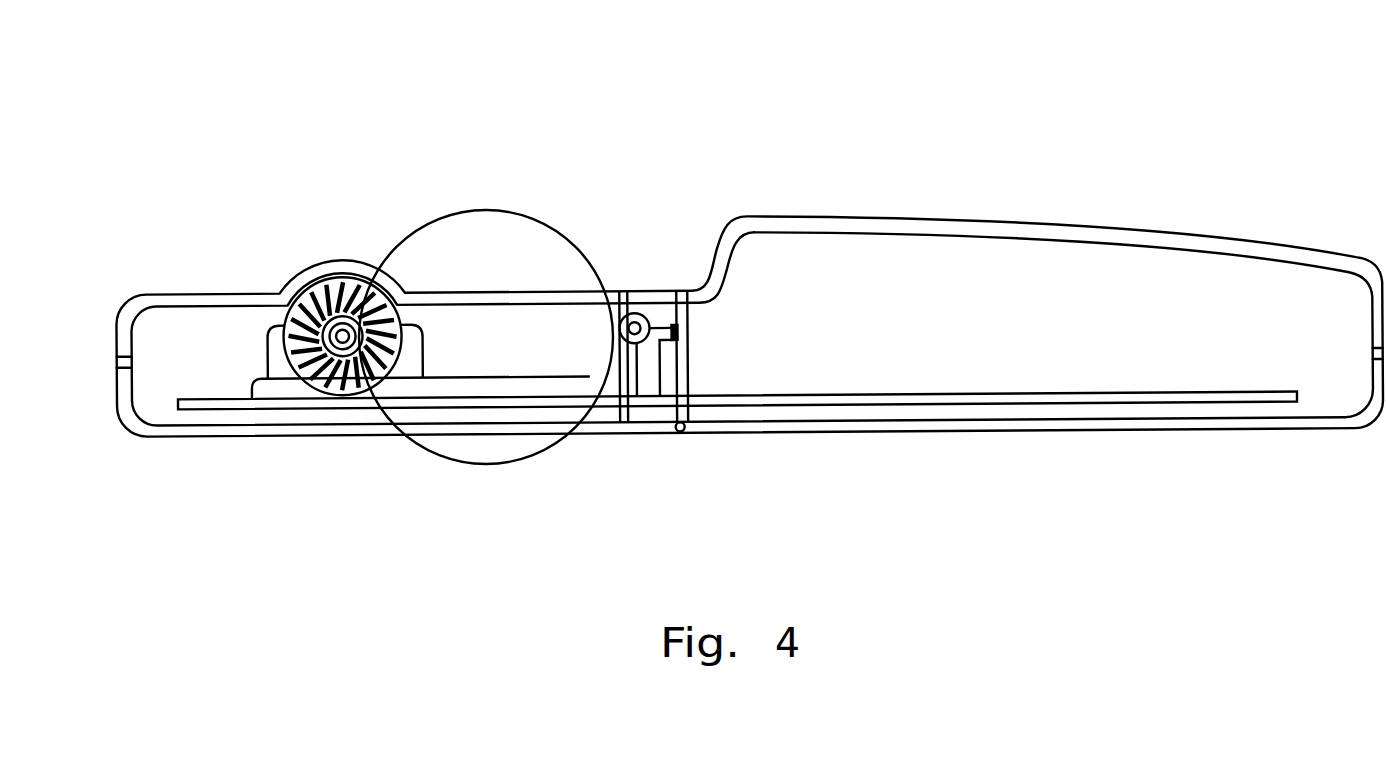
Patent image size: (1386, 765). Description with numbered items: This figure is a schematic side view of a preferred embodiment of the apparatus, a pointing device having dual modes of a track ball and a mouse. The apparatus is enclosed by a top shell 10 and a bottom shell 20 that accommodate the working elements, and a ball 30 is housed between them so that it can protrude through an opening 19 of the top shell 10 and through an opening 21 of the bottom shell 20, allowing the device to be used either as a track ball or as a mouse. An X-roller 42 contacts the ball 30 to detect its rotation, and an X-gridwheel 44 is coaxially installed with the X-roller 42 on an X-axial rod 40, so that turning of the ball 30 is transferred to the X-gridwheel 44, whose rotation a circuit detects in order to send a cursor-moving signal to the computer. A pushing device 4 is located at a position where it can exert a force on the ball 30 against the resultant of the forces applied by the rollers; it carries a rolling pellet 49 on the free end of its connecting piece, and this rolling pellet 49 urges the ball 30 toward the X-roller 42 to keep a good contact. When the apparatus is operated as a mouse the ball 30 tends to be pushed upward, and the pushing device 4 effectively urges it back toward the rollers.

The pushing device 4 is at (690, 336).
The top shell 10 is at (148, 294).
The opening 19 is at (617, 304).
The bottom shell 20 is at (173, 437).
The opening 21 is at (578, 430).
The ball 30 is at (483, 227).
The X-axial rod 40 is at (346, 357).
The X-roller 42 is at (343, 338).
The X-gridwheel 44 is at (323, 314).
The rolling pellet 49 is at (640, 315).